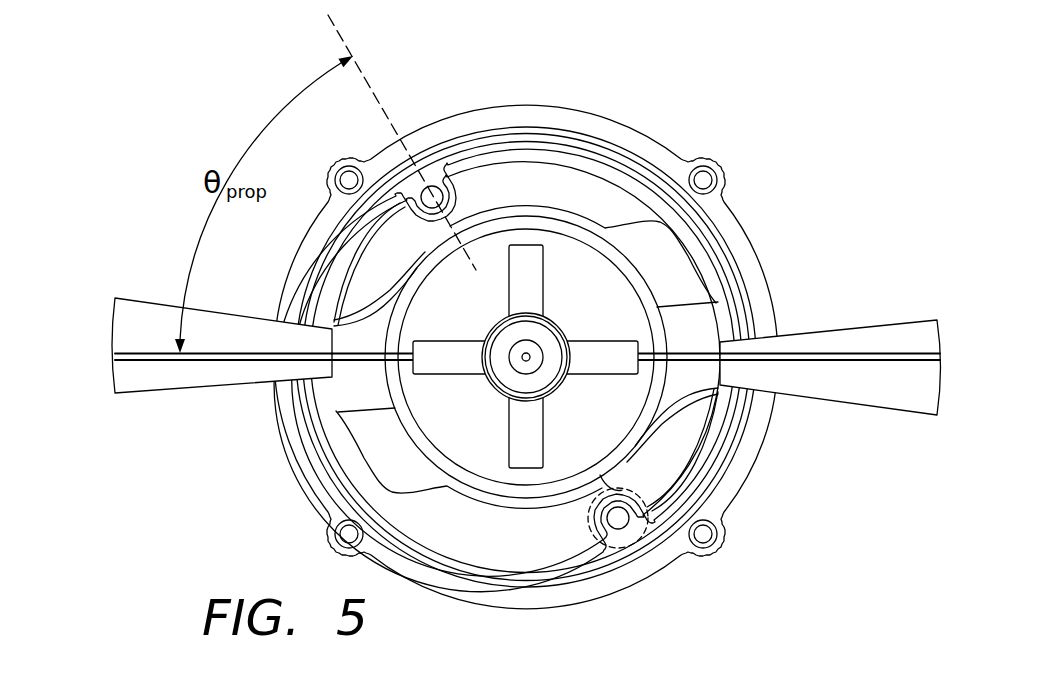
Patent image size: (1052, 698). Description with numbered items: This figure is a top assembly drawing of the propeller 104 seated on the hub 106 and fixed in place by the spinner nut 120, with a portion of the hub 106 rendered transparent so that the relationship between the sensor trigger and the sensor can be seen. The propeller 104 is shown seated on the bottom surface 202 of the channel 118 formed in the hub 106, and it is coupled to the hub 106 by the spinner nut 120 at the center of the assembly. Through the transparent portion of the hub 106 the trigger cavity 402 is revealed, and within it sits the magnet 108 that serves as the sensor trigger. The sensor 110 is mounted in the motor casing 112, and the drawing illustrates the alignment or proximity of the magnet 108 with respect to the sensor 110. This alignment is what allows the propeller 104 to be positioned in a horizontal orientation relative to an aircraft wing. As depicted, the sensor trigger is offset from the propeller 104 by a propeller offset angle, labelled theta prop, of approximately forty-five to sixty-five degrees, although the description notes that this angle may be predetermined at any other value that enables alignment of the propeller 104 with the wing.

The propeller 104 is at (163, 373).
The hub 106 is at (583, 178).
The magnet 108 is at (618, 522).
The sensor 110 is at (660, 490).
The motor casing 112 is at (666, 137).
The channel 118 is at (662, 250).
The spinner nut 120 is at (488, 248).
The bottom surface 202 is at (683, 283).
The trigger cavity 402 is at (619, 567).